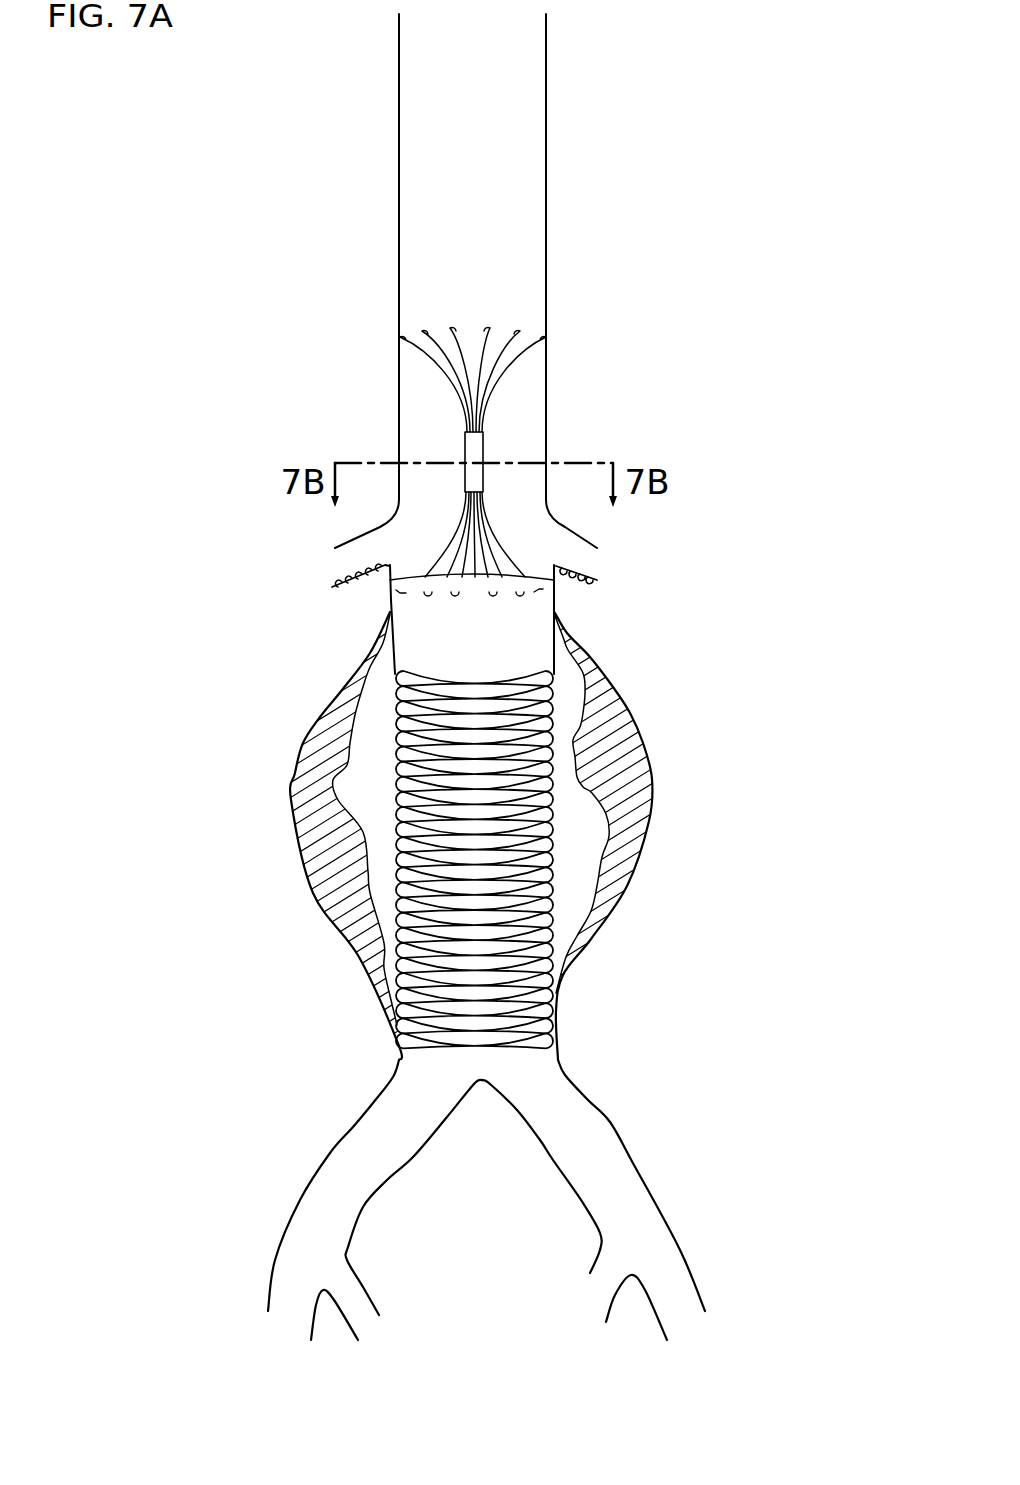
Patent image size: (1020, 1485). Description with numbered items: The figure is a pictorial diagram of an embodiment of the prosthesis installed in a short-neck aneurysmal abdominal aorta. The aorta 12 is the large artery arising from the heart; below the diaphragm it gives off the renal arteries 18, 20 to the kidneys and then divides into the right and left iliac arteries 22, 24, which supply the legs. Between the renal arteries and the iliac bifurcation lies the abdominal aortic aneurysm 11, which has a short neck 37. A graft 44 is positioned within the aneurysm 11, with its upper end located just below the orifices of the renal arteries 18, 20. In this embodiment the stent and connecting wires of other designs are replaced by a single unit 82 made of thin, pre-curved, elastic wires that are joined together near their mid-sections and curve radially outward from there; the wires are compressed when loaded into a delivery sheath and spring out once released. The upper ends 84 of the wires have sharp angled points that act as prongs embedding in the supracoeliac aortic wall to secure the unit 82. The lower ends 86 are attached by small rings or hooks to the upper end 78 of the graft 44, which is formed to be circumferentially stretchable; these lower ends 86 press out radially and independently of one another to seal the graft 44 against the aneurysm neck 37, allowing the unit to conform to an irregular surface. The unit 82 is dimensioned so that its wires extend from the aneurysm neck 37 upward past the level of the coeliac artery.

The abdominal aortic aneurysm 11 is at (291, 777).
The aorta 12 is at (556, 126).
The renal artery 18 is at (575, 555).
The renal artery 20 is at (347, 557).
The right iliac artery 22 is at (588, 1096).
The left iliac artery 24 is at (352, 1133).
The aneurysm neck 37 is at (392, 590).
The graft 44 is at (556, 829).
The upper end of the graft 78 is at (527, 652).
The wire unit 82 is at (427, 428).
The upper ends of the wires 84 is at (552, 339).
The lower ends of the wires 86 is at (527, 594).